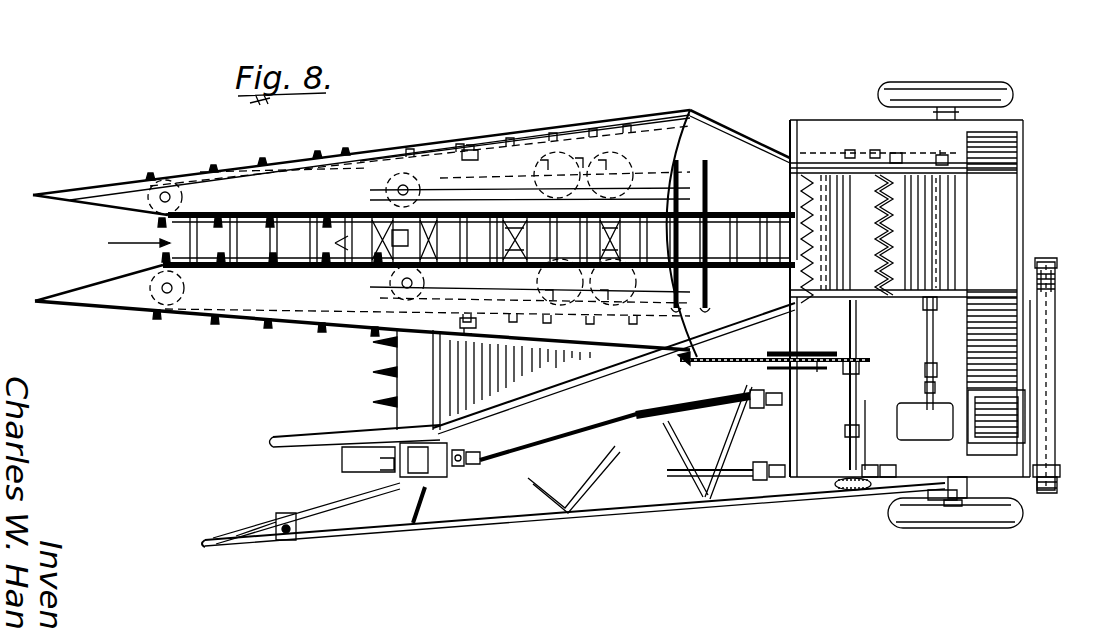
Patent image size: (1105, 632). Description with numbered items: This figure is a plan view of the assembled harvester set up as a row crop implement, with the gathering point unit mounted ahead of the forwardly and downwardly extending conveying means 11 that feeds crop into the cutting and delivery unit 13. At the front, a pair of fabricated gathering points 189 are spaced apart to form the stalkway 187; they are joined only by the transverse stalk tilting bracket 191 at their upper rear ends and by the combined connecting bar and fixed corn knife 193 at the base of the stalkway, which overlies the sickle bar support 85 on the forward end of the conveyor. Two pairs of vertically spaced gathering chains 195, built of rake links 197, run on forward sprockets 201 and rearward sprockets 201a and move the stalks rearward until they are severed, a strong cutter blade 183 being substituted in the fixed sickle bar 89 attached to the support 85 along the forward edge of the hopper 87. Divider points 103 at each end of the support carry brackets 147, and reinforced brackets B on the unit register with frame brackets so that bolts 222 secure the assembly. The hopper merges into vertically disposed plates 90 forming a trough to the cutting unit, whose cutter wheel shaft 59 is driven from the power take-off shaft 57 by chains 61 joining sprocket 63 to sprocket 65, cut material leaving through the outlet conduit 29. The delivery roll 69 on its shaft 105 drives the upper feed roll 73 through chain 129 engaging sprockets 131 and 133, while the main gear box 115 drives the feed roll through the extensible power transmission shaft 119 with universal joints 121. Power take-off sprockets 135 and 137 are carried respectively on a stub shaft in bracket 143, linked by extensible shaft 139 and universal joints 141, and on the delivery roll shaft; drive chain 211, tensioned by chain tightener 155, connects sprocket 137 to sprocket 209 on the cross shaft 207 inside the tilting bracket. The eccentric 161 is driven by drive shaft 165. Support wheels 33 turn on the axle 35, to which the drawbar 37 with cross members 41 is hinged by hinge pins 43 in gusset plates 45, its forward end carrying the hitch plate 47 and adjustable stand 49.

The conveying means 11 is at (551, 235).
The cutting and delivery unit 13 is at (1012, 213).
The outlet conduit 29 is at (1012, 408).
The support wheels 33 is at (990, 83).
The axle 35 is at (948, 100).
The drawbar 37 is at (558, 518).
The cross members 41 is at (727, 436).
The hinge pins 43 is at (930, 500).
The gusset plates 45 is at (952, 506).
The hitch plate 47 is at (206, 550).
The adjustable stand 49 is at (290, 536).
The power take-off shaft 57 is at (745, 480).
The shaft 59 is at (1042, 262).
The chains 61 is at (1053, 366).
The sprocket 63 is at (1048, 480).
The sprocket 65 is at (1057, 282).
The delivery roll 69 is at (862, 190).
The upper feed roll 73 is at (940, 240).
The sickle bar support 85 is at (413, 382).
The hopper 87 is at (598, 372).
The fixed sickle bar 89 is at (962, 162).
The vertically disposed plates 90 is at (797, 165).
The divider point 103 is at (325, 442).
The delivery roll shaft 105 is at (857, 342).
The main gear box 115 is at (950, 436).
The power transmission shaft 119 is at (926, 340).
The universal joints 121 is at (935, 368).
The chain 129 is at (896, 153).
The sprocket 131 is at (842, 150).
The sprocket 133 is at (941, 155).
The power take-off sprocket 135 is at (855, 494).
The power take-off sprocket 137 is at (860, 368).
The extensible shaft 139 is at (848, 412).
The universal joints 141 is at (860, 392).
The bracket 143 is at (878, 472).
The brackets 147 is at (347, 462).
The chain tightener 155 is at (817, 367).
The eccentric 161 is at (433, 473).
The drive shaft 165 is at (575, 437).
The cutter blade 183 is at (392, 237).
The stalkway 187 is at (124, 243).
The gathering points 189 is at (292, 176).
The stalk tilting bracket 191 is at (708, 178).
The connecting bar and fixed corn knife 193 is at (335, 245).
The gathering chains 195 is at (346, 160).
The rake links 197 is at (272, 256).
The sprockets 201 is at (172, 180).
The rearward sprockets 201a is at (614, 150).
The cross shaft 207 is at (704, 363).
The sprocket 209 is at (682, 364).
The drive chain 211 is at (750, 358).
The bolts 222 is at (470, 150).
The reinforced brackets B is at (480, 148).